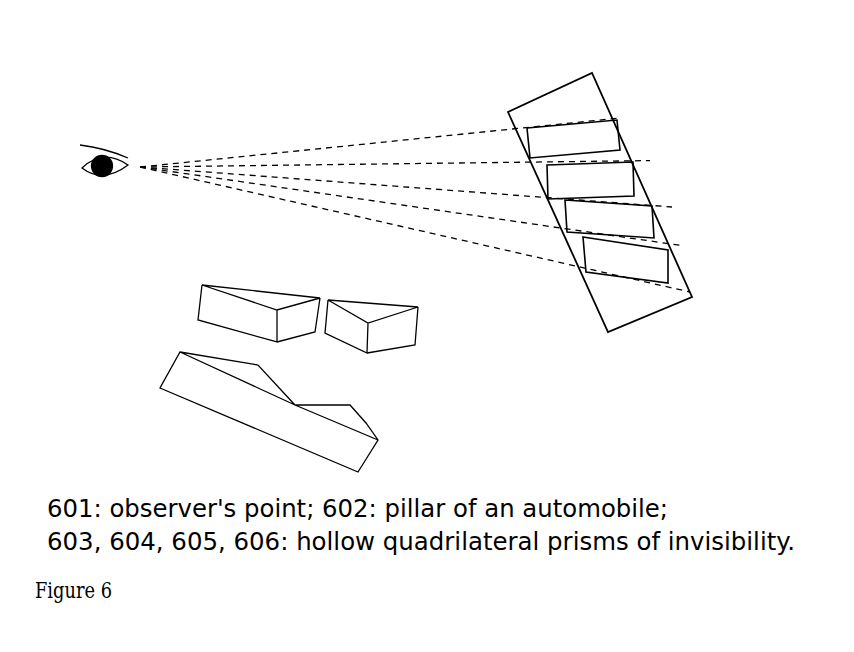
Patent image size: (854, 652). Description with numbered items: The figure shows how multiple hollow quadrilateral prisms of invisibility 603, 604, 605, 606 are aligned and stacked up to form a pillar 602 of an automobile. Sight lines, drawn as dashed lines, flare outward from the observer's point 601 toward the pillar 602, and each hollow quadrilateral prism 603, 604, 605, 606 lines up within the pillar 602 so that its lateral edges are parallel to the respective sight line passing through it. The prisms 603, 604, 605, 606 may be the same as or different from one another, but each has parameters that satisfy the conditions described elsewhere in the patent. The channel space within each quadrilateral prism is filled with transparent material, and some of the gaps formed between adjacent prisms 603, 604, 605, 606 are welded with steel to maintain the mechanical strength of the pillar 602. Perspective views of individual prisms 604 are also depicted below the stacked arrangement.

The observer's point 601 is at (113, 178).
The pillar of an automobile 602 is at (570, 102).
The hollow quadrilateral prism of invisibility 603 is at (578, 142).
The hollow quadrilateral prism of invisibility 604 is at (597, 177).
The hollow quadrilateral prism of invisibility 605 is at (607, 220).
The hollow quadrilateral prism of invisibility 606 is at (625, 258).